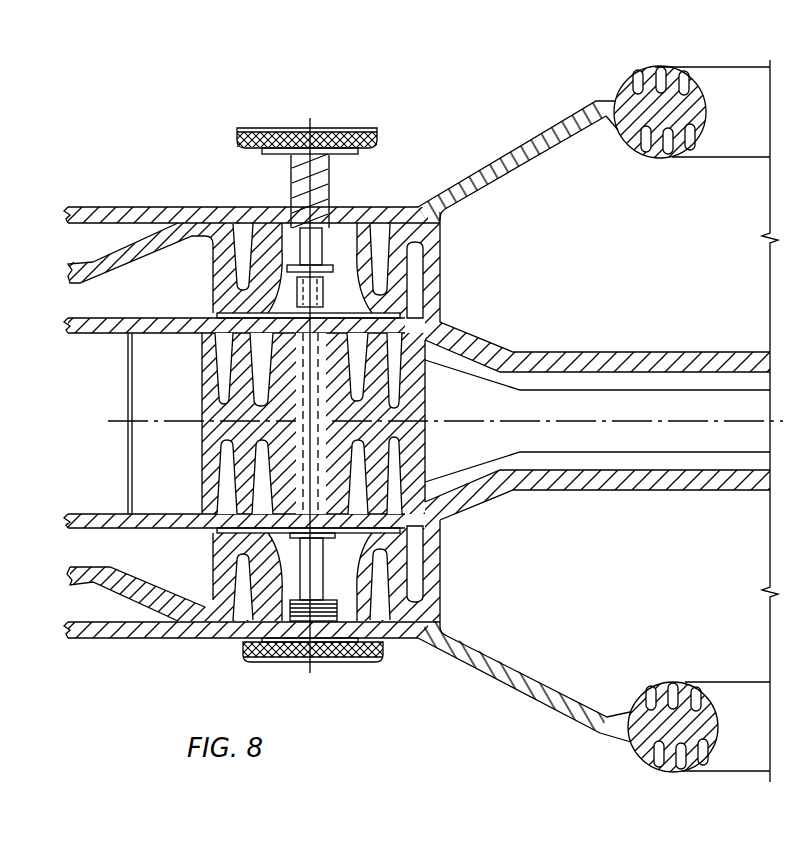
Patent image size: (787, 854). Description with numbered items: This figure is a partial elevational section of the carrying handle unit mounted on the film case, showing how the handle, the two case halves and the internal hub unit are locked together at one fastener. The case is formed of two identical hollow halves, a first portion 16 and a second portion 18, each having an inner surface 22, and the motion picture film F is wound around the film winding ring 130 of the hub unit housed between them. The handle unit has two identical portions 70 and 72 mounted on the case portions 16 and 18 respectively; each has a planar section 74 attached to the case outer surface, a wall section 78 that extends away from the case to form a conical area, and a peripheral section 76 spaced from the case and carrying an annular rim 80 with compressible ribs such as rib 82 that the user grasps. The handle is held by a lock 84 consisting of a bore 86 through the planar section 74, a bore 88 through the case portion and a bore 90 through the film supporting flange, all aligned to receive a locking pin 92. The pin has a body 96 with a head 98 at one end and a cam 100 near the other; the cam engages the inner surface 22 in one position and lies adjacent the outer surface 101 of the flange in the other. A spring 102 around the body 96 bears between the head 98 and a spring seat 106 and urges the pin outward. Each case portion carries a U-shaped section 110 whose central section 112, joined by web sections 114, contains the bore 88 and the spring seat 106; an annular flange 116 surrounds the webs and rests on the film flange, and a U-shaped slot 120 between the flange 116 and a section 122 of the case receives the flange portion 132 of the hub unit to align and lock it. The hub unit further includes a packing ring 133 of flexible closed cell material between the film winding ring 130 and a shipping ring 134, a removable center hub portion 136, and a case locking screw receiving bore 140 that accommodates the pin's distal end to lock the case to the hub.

The first portion 16 is at (95, 258).
The second portion 18 is at (108, 590).
The inner surface 22 is at (75, 285).
The handle portion 70 is at (507, 153).
The handle portion 72 is at (508, 720).
The planar section 74 is at (380, 209).
The peripheral section 76 is at (603, 103).
The wall section 78 is at (535, 162).
The annular rim 80 is at (650, 157).
The rib 82 is at (683, 158).
The lock 84 is at (342, 124).
The bore 86 is at (290, 220).
The bore 88 is at (290, 237).
The bore 90 is at (306, 374).
The locking pin 92 is at (366, 128).
The body 96 is at (233, 315).
The head 98 is at (253, 129).
The cam 100 is at (253, 359).
The outer surface 101 is at (114, 320).
The spring 102 is at (400, 308).
The spring seat 106 is at (421, 336).
The U-shaped section 110 is at (205, 269).
The central section 112 is at (345, 235).
The web section 114 is at (202, 367).
The annular flange 116 is at (220, 316).
The U-shaped slot 120 is at (442, 255).
The section 122 is at (446, 294).
The film winding ring 130 is at (128, 396).
The flange portion 132 is at (455, 343).
The packing ring 133 is at (183, 400).
The shipping ring 134 is at (398, 465).
The removable center hub portion 136 is at (667, 455).
The case locking screw receiving bore 140 is at (262, 445).
The motion picture film F is at (97, 432).